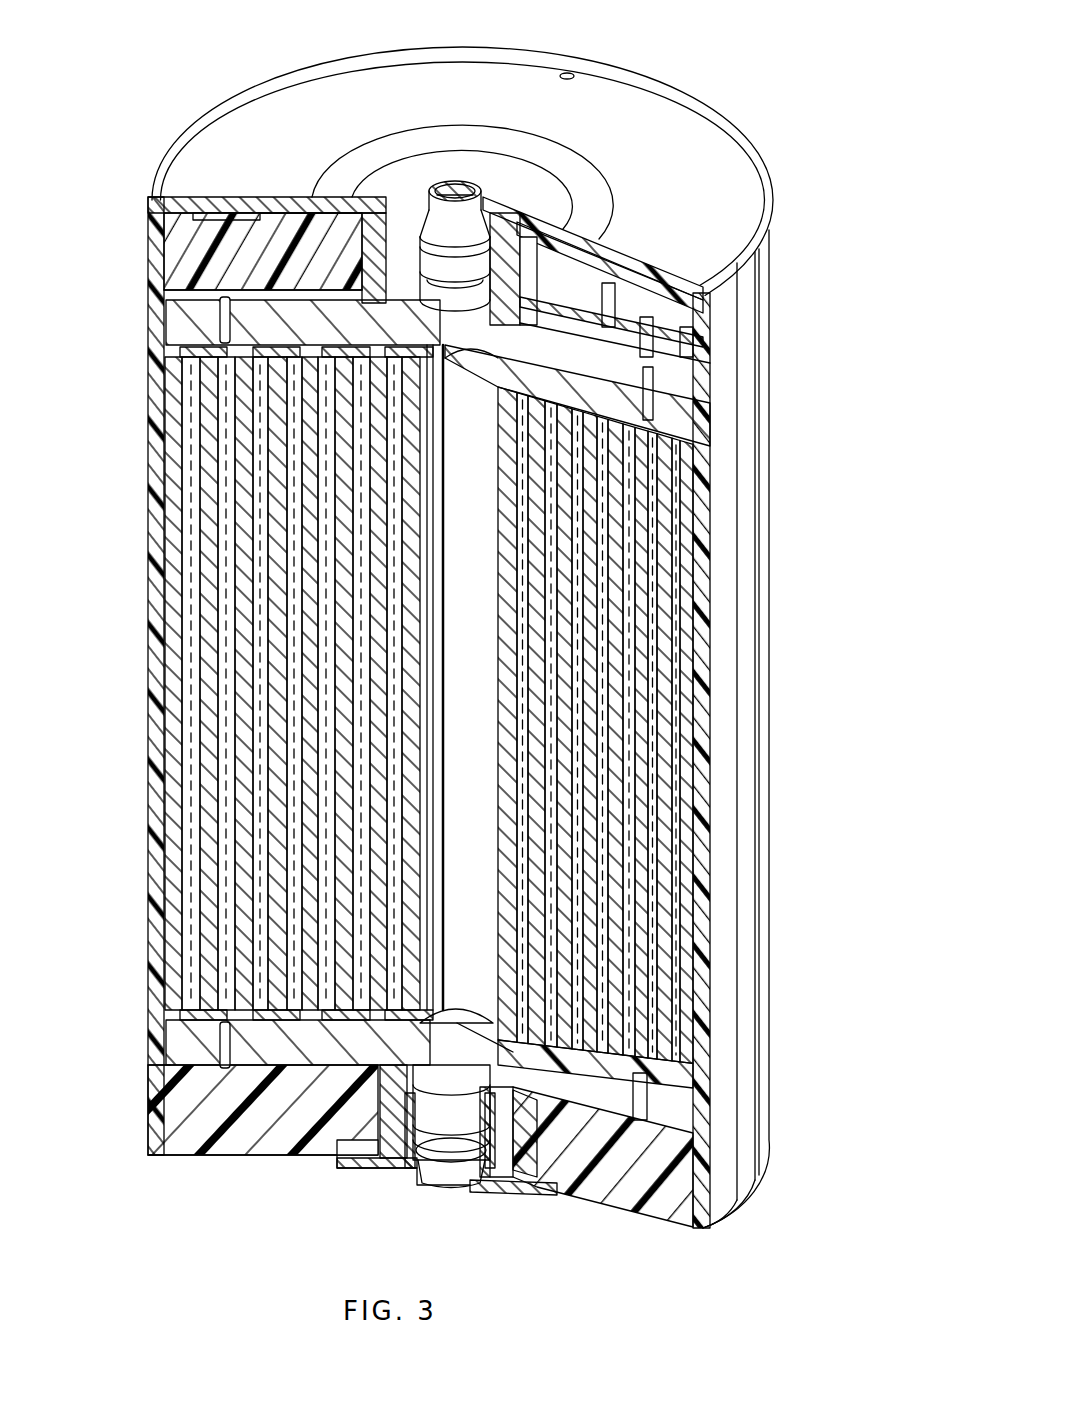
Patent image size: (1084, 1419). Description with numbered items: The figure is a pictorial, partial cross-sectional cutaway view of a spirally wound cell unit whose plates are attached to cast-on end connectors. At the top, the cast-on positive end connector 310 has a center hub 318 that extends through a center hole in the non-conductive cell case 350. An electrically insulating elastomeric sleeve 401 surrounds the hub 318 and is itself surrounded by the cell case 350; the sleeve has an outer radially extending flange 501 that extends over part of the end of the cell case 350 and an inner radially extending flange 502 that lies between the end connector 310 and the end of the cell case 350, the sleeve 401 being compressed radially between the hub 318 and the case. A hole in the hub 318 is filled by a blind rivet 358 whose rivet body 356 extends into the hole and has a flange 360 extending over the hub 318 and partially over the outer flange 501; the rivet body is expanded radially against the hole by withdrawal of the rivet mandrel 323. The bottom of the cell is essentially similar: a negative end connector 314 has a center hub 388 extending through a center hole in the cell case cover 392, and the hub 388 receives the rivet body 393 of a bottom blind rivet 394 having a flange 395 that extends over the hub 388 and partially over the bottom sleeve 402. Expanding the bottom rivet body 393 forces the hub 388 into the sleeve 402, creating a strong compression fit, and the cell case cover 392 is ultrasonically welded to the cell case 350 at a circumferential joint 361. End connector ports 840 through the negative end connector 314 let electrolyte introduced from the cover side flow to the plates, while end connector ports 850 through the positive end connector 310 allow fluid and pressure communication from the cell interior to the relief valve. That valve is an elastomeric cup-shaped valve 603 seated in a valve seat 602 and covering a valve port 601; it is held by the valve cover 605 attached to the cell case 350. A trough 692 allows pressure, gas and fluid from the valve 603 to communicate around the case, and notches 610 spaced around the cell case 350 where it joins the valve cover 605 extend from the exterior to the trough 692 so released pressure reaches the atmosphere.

The positive end connector 310 is at (183, 323).
The negative end connector 314 is at (175, 1037).
The center hub 318 is at (380, 210).
The rivet mandrel 323 is at (457, 193).
The cell case 350 is at (160, 246).
The rivet body 356 is at (563, 253).
The blind rivet 358 is at (517, 160).
The flange 360 is at (433, 163).
The circumferential joint 361 is at (150, 1132).
The center hub 388 is at (392, 1160).
The cell case cover 392 is at (178, 1147).
The rivet body 393 is at (488, 1182).
The bottom blind rivet 394 is at (335, 1162).
The flange 395 is at (540, 1195).
The elastomeric sleeve 401 is at (600, 250).
The bottom sleeve 402 is at (553, 1147).
The outer radially extending flange 501 is at (327, 195).
The inner radially extending flange 502 is at (300, 205).
The valve port 601 is at (700, 380).
The valve seat 602 is at (700, 350).
The valve 603 is at (660, 270).
The valve cover 605 is at (740, 232).
The notches 610 is at (568, 72).
The trough 692 is at (177, 197).
The end connector ports 840 is at (653, 1100).
The end connector ports 850 is at (720, 437).